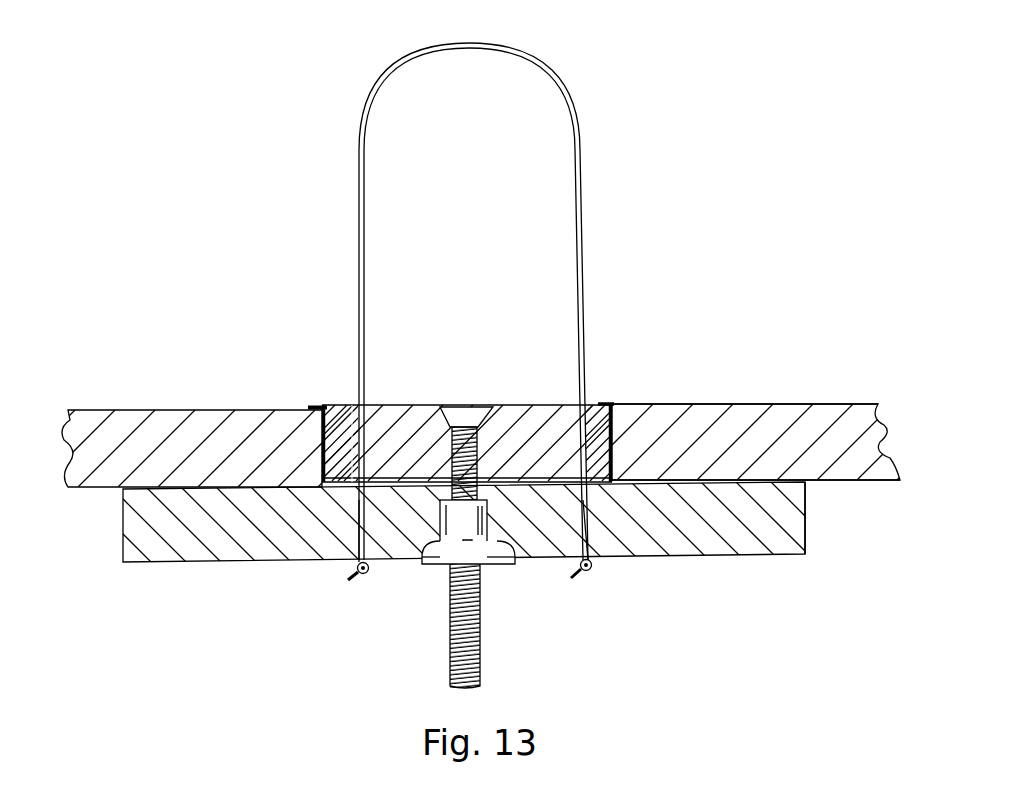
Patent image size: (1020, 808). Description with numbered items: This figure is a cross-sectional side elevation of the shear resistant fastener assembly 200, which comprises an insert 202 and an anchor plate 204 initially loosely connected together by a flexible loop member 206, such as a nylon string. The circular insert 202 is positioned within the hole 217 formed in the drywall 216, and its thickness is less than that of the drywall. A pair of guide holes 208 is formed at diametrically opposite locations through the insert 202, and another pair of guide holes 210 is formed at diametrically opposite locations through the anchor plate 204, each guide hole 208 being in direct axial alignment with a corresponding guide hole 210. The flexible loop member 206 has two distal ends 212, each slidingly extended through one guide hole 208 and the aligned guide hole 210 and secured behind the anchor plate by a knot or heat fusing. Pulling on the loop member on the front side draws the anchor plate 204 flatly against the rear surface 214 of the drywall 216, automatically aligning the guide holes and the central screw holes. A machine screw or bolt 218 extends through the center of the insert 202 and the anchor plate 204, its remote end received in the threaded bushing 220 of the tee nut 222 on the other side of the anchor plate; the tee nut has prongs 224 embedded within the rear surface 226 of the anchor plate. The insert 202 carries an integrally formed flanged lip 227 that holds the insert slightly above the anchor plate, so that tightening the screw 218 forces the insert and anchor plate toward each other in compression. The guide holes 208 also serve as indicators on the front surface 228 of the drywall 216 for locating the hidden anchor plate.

The shear resistant fastener assembly 200 is at (240, 333).
The insert 202 is at (461, 398).
The anchor plate 204 is at (703, 564).
The flexible loop member 206 is at (574, 140).
The guide holes 208 is at (358, 403).
The guide holes 210 is at (357, 564).
The distal ends 212 is at (363, 576).
The rear surface 214 is at (800, 473).
The drywall 216 is at (842, 481).
The hole 217 is at (326, 420).
The machine screw or bolt 218 is at (467, 415).
The threaded bushing 220 is at (479, 561).
The tee nut 222 is at (492, 586).
The prongs 224 is at (505, 556).
The rear surface 226 is at (787, 557).
The flanged lip 227 is at (617, 403).
The front surface 228 is at (707, 400).